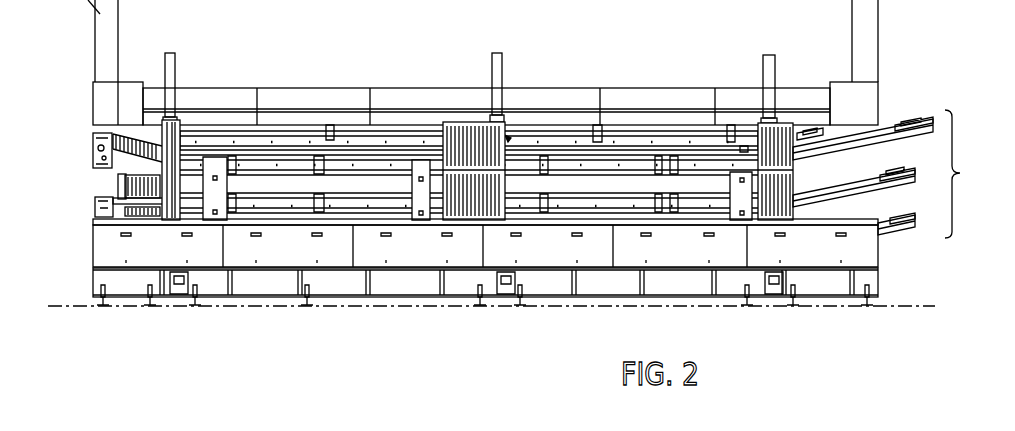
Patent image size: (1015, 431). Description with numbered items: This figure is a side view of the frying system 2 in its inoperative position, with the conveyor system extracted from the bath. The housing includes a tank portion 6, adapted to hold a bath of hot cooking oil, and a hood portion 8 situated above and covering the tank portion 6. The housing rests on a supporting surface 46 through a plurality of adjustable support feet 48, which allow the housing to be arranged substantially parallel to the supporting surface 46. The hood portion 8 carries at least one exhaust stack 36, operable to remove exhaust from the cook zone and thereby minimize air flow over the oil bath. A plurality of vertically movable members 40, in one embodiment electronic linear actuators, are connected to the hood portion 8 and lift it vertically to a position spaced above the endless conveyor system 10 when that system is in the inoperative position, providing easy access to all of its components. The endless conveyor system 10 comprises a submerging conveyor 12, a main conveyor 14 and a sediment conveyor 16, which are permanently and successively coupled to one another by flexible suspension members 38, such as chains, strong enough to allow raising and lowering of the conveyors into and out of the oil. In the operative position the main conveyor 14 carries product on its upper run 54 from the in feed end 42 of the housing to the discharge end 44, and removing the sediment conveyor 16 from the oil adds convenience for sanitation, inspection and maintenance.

The frying system 2 is at (583, 60).
The tank portion 6 is at (98, 247).
The hood portion 8 is at (93, 92).
The endless conveyor system 10 is at (891, 174).
The submerging conveyor 12 is at (657, 140).
The main conveyor 14 is at (93, 148).
The sediment conveyor 16 is at (95, 200).
The exhaust stack 36 is at (878, 48).
The flexible suspension members 38 is at (190, 152).
The vertically movable members 40 is at (165, 60).
The in feed end 42 is at (41, 103).
The discharge end 44 is at (936, 82).
The supporting surface 46 is at (50, 306).
The support feet 48 is at (150, 308).
The upper run 54 is at (896, 125).